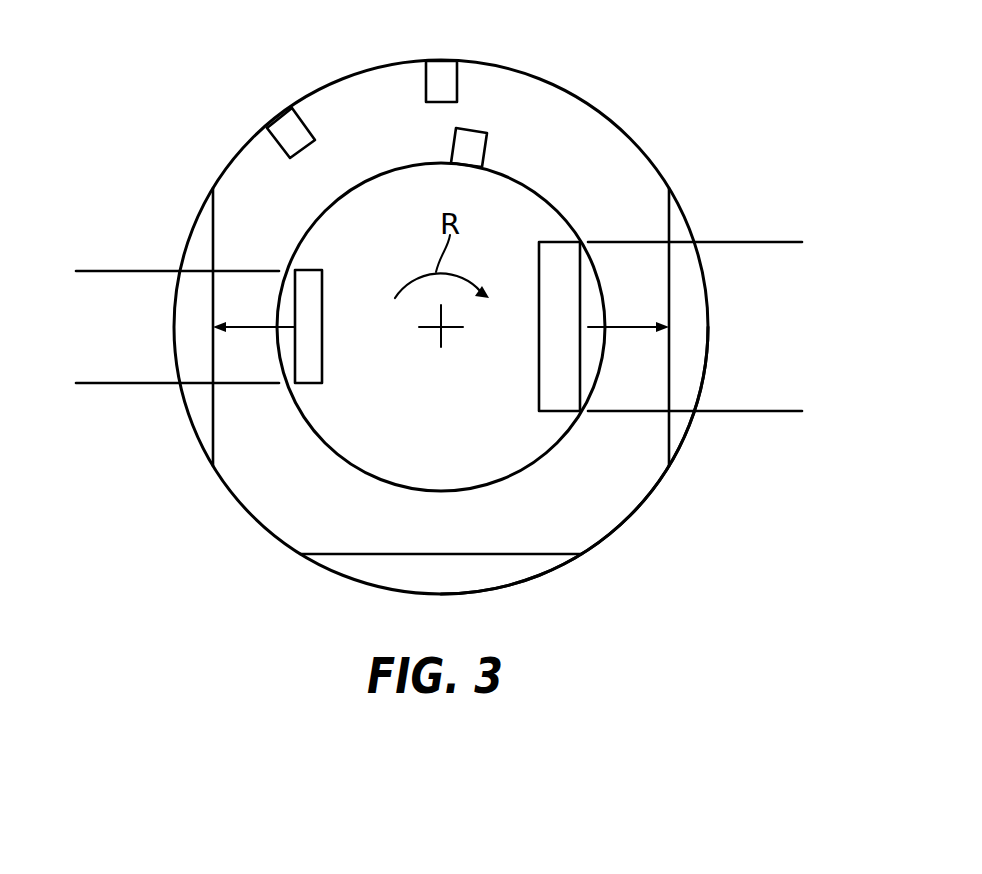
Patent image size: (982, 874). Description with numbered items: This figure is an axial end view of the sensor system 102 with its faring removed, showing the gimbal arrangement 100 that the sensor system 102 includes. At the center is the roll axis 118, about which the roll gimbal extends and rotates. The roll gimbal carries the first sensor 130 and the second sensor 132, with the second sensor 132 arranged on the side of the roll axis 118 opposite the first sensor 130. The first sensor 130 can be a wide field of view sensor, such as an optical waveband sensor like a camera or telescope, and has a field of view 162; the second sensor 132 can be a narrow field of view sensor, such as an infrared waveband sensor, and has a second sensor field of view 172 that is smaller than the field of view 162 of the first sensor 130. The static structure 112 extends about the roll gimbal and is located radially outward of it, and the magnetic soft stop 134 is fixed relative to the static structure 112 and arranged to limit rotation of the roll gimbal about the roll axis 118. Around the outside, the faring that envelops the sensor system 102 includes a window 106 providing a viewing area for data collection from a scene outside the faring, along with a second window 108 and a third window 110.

The gimbal arrangement 100 is at (203, 120).
The sensor system 102 is at (190, 652).
The window 106 is at (669, 375).
The second window 108 is at (213, 433).
The third window 110 is at (463, 554).
The static structure 112 is at (645, 502).
The roll axis 118 is at (458, 328).
The first sensor 130 is at (539, 268).
The second sensor 132 is at (322, 348).
The magnetic soft stop 134 is at (457, 83).
The field of view 162 is at (787, 410).
The second sensor field of view 172 is at (90, 271).